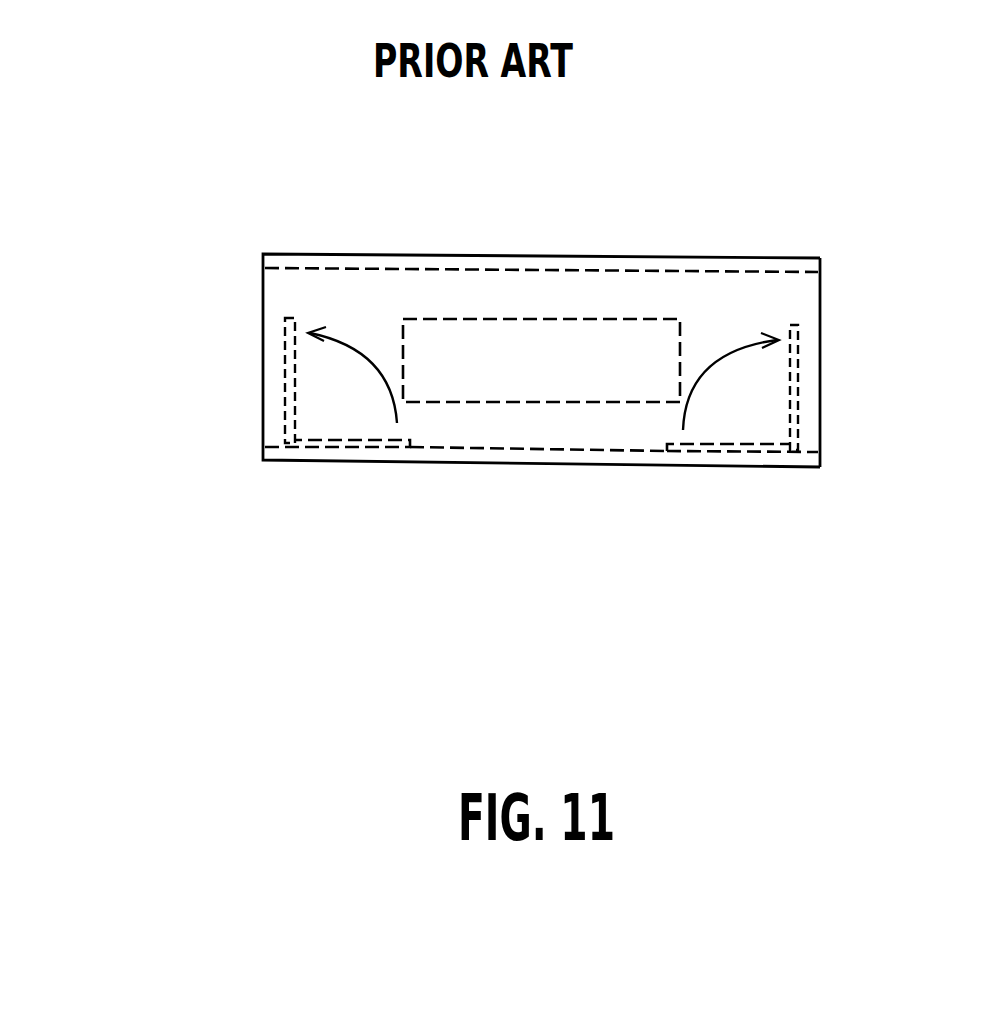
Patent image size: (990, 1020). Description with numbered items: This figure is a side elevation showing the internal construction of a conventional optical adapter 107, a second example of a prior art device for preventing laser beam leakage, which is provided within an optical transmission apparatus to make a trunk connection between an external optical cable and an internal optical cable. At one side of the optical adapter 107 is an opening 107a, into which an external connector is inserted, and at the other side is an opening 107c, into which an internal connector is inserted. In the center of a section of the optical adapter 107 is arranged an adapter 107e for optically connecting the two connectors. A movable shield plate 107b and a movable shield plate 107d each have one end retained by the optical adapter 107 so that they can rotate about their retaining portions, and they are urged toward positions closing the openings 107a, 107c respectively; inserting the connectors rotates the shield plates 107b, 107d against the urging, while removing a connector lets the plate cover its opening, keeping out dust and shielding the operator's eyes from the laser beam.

The optical adapter 107 is at (548, 494).
The opening 107a is at (263, 292).
The movable shield plate 107b is at (290, 356).
The opening 107c is at (820, 303).
The movable shield plate 107d is at (796, 388).
The adapter 107e is at (582, 333).